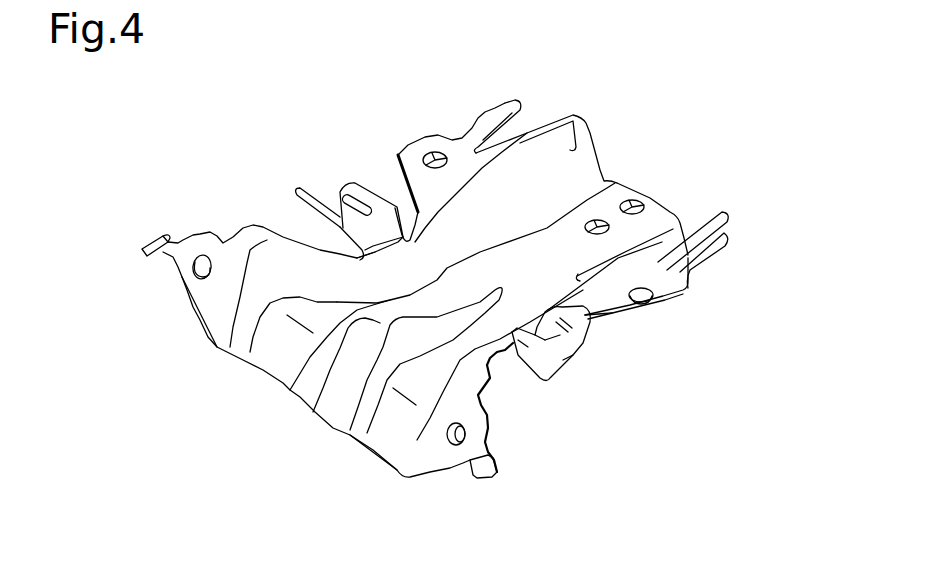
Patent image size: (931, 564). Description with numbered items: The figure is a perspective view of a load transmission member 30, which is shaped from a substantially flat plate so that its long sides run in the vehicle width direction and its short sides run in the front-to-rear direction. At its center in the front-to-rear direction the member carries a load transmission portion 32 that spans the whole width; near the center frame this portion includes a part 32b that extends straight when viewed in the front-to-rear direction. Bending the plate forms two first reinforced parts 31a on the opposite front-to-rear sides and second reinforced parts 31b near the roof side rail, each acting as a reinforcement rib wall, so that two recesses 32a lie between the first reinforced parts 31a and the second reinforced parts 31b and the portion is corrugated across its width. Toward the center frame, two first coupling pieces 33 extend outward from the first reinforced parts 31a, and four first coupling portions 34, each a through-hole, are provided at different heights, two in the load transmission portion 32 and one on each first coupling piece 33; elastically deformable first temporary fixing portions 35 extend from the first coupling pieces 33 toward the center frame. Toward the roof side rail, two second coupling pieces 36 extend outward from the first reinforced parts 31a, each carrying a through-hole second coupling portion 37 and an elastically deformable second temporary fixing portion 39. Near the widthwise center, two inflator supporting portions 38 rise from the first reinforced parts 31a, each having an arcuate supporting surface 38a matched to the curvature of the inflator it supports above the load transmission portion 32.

The load transmission member 30 is at (664, 172).
The first reinforced part 31a is at (589, 135).
The second reinforced part 31b is at (325, 400).
The load transmission portion 32 is at (517, 273).
The recess 32a is at (593, 177).
The straight part 32b is at (618, 252).
The first coupling piece 33 is at (400, 152).
The first coupling portion 34 is at (432, 165).
The first temporary fixing portion 35 is at (513, 98).
The second coupling piece 36 is at (183, 273).
The second coupling portion 37 is at (197, 279).
The inflator supporting portion 38 is at (335, 202).
The supporting surface 38a is at (365, 190).
The second temporary fixing portion 39 is at (143, 247).